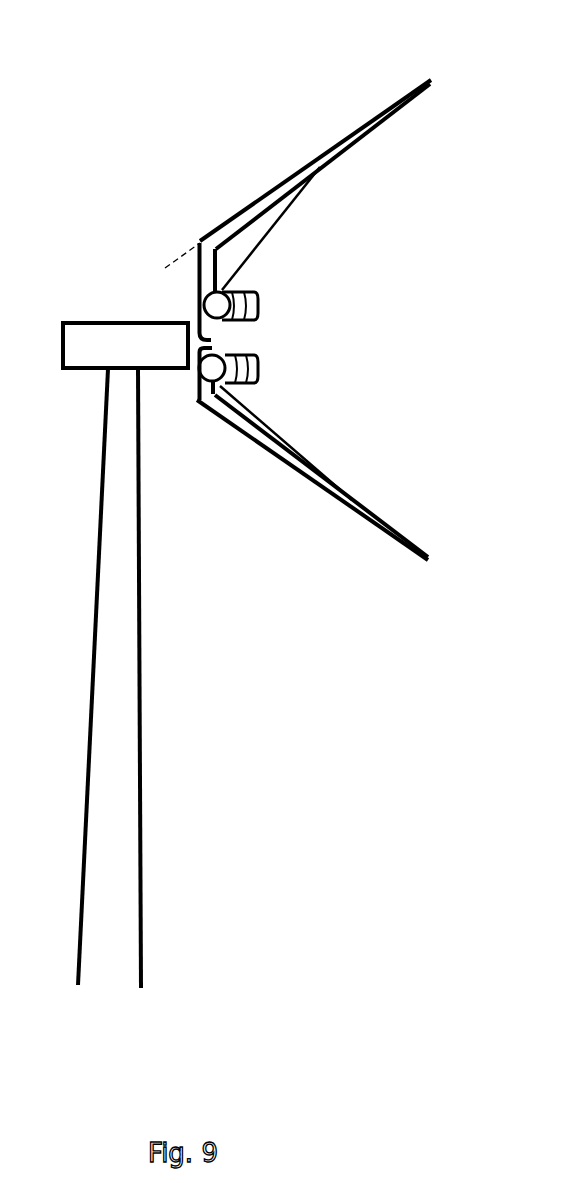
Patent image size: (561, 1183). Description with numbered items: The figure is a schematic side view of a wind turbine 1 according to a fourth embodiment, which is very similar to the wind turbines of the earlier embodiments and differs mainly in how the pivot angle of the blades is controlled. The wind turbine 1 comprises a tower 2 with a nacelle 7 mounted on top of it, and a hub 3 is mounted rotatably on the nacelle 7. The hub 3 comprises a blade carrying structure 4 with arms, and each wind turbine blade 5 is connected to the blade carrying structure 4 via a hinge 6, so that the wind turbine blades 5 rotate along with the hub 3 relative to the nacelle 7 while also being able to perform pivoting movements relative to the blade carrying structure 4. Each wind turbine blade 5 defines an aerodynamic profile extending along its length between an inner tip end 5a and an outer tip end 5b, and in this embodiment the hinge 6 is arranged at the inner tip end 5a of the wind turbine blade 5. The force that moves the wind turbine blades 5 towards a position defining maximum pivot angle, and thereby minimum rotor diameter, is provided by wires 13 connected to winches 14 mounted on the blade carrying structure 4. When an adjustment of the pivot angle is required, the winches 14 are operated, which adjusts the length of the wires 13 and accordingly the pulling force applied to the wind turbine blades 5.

The wind turbine 1 is at (432, 658).
The tower 2 is at (107, 688).
The hub 3 is at (200, 344).
The blade carrying structure 4 is at (197, 288).
The wind turbine blade 5 is at (280, 284).
The inner tip end 5a is at (200, 240).
The outer tip end 5b is at (432, 82).
The hinge 6 is at (200, 240).
The nacelle 7 is at (75, 343).
The wire 13 is at (283, 228).
The winch 14 is at (250, 297).